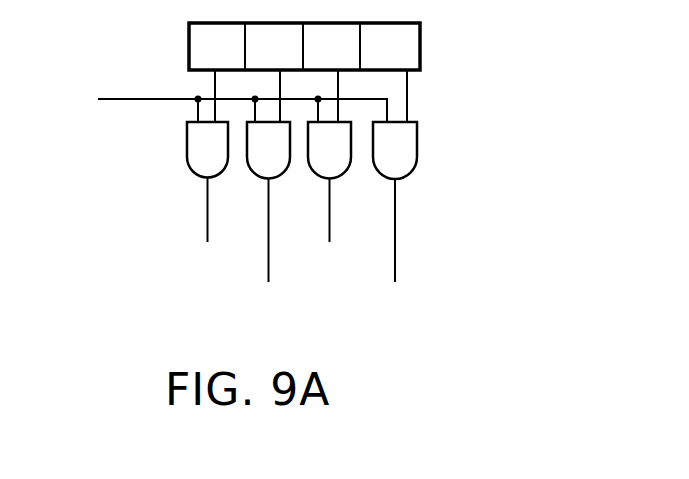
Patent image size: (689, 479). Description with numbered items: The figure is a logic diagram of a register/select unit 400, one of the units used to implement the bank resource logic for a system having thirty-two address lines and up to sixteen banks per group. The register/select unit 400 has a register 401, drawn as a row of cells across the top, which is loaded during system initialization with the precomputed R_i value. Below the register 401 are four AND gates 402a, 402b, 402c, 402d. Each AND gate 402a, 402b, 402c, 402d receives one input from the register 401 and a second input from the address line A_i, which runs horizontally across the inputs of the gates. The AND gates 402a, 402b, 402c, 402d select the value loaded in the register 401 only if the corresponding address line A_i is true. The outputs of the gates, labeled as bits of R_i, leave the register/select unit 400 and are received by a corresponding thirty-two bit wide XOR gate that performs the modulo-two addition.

The register/select unit 400 is at (160, 175).
The register 401 is at (402, 52).
The AND gate 402a is at (187, 137).
The AND gate 402b is at (250, 128).
The AND gate 402c is at (353, 128).
The AND gate 402d is at (503, 123).